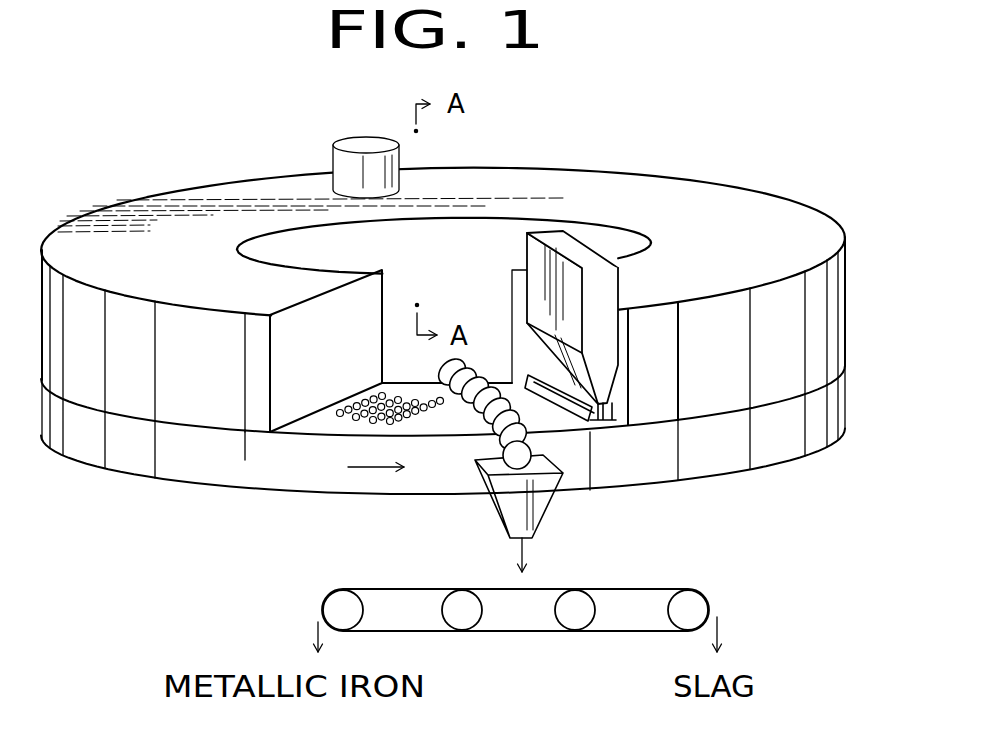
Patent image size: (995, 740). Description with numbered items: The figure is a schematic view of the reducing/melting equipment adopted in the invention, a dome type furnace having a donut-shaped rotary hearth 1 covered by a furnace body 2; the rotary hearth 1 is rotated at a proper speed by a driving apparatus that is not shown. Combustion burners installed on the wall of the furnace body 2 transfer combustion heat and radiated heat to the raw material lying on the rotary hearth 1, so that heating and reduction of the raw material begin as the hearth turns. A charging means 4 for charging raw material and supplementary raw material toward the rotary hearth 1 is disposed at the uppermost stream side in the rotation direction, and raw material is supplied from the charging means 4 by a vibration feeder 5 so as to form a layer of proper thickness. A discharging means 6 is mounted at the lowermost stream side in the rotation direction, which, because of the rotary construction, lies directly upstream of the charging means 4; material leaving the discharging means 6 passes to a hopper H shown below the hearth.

The rotary hearth 1 is at (135, 460).
The furnace body 2 is at (735, 202).
The charging means 4 is at (558, 236).
The vibration feeder 5 is at (513, 353).
The discharging means 6 is at (446, 368).
The hopper H is at (542, 513).